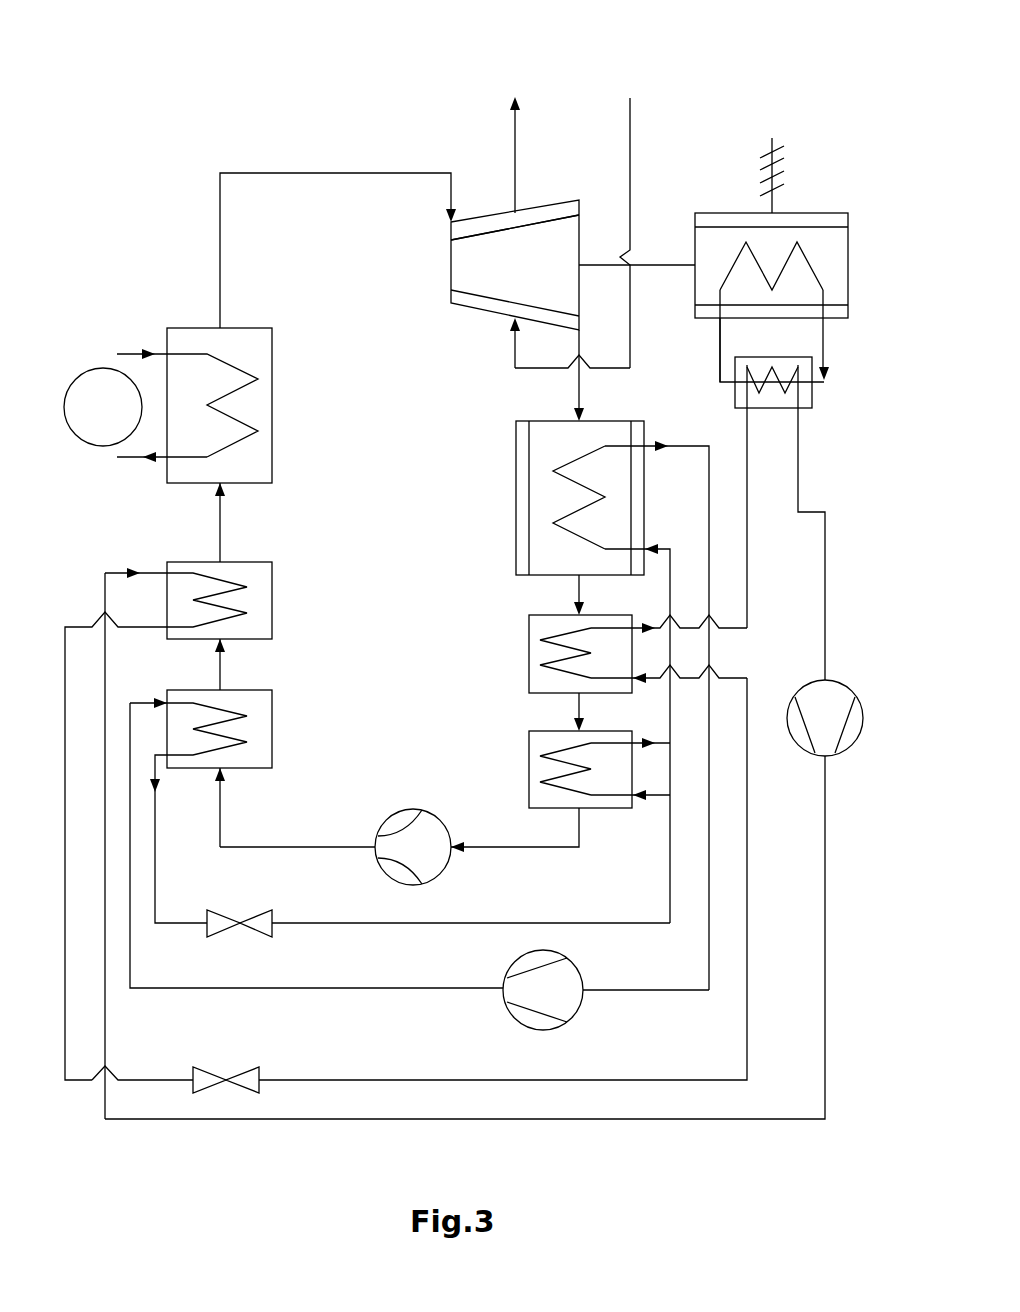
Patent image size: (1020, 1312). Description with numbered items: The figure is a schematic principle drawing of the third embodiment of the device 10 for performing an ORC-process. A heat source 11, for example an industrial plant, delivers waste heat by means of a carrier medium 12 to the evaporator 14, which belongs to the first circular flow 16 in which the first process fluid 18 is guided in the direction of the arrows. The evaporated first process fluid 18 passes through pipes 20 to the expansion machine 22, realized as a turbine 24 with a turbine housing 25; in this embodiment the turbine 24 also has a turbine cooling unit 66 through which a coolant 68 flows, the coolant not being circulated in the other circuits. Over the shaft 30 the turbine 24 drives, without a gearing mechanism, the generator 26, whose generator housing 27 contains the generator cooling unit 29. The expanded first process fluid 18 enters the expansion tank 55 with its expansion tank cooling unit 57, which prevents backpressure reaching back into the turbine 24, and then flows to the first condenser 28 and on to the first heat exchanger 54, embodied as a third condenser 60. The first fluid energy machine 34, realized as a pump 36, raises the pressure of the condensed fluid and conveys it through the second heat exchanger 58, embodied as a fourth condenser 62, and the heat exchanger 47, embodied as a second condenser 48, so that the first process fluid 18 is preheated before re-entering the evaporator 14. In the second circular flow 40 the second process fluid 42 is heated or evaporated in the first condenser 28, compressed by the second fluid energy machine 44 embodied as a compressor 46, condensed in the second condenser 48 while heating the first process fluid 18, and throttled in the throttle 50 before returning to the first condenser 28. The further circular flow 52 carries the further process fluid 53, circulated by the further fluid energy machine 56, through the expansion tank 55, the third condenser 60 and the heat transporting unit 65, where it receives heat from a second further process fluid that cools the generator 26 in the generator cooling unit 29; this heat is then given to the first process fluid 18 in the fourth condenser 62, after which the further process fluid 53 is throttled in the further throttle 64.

The device for performing an ORC-process 10 is at (146, 90).
The heat source 11 is at (102, 380).
The carrier medium 12 is at (143, 467).
The evaporator 14 is at (263, 417).
The first circular flow 16 is at (338, 196).
The first process fluid 18 is at (338, 196).
The pipes 20 is at (360, 173).
The expansion machine 22 is at (531, 254).
The turbine 24 is at (488, 252).
The turbine housing 25 is at (527, 147).
The turbine cooling unit 66 is at (542, 212).
The coolant 68 is at (632, 143).
The shaft 30 is at (647, 263).
The generator 26 is at (823, 237).
The generator housing 27 is at (759, 151).
The generator cooling unit 29 is at (733, 218).
The further circular flow 52 is at (425, 692).
The further process fluid 53 is at (323, 1027).
The heat transporting unit 65 is at (733, 395).
The expansion tank 55 is at (564, 705).
The expansion tank cooling unit 57 is at (540, 498).
The first condenser 28 is at (541, 653).
The first heat exchanger 54 is at (540, 779).
The third condenser 60 is at (529, 738).
The first fluid energy machine 34 is at (354, 820).
The pump 36 is at (438, 833).
The heat exchanger 47 is at (231, 821).
The second condenser 48 is at (260, 602).
The second heat exchanger 58 is at (261, 806).
The fourth condenser 62 is at (260, 720).
The further throttle 64 is at (222, 935).
The further fluid energy machine 56 is at (568, 1002).
The second fluid energy machine 44 is at (484, 858).
The compressor 46 is at (812, 693).
The throttle 50 is at (207, 1082).
The second circular flow 40 is at (426, 882).
The second process fluid 42 is at (672, 1082).